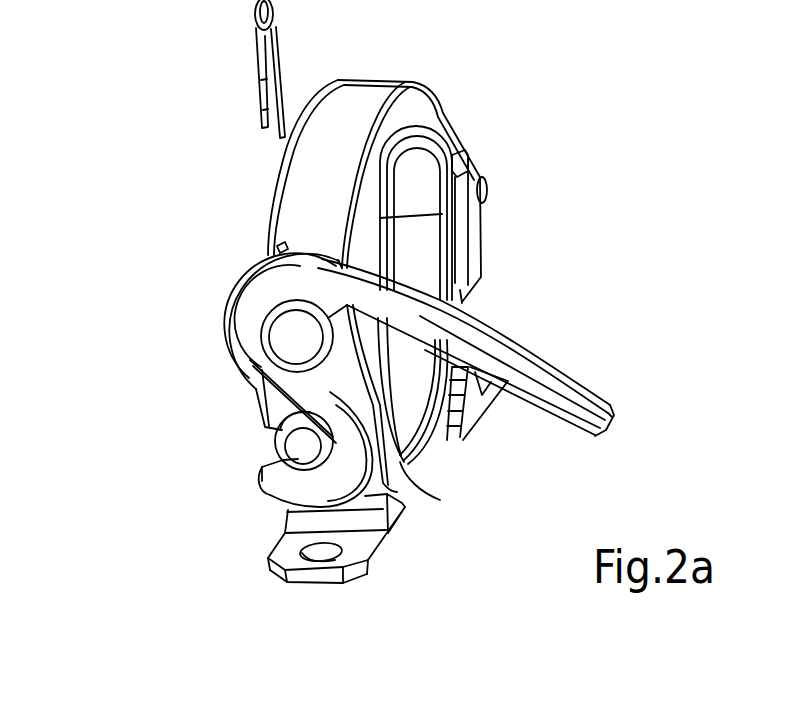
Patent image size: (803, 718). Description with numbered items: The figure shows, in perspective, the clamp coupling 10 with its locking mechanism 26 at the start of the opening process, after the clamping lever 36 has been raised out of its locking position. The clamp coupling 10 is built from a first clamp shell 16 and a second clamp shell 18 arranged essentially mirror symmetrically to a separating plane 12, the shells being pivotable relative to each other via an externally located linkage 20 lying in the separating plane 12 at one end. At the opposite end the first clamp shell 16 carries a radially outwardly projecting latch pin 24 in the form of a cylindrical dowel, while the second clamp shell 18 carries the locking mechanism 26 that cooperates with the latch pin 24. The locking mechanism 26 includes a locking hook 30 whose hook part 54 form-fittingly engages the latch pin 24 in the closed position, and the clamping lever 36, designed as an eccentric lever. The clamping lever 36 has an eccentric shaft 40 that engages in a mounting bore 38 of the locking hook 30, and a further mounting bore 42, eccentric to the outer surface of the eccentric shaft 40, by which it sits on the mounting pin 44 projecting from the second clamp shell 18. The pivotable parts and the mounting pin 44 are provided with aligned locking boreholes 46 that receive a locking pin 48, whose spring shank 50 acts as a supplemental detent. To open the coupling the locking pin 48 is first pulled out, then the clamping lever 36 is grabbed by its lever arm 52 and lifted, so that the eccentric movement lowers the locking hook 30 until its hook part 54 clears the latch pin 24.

The clamp coupling 10 is at (503, 290).
The separating plane 12 is at (450, 231).
The first clamp shell 16 is at (405, 481).
The second clamp shell 18 is at (420, 105).
The linkage 20 is at (482, 180).
The latch pin 24 is at (297, 447).
The locking mechanism 26 is at (229, 272).
The locking hook 30 is at (355, 418).
The clamping lever 36 is at (338, 260).
The mounting bore 38 is at (260, 357).
The eccentric shaft 40 is at (288, 277).
The mounting bore 42 is at (280, 341).
The mounting pin 44 is at (272, 350).
The locking boreholes 46 is at (272, 243).
The locking pin 48 is at (277, 50).
The spring shank 50 is at (263, 97).
The lever arm 52 is at (578, 400).
The hook part 54 is at (274, 487).